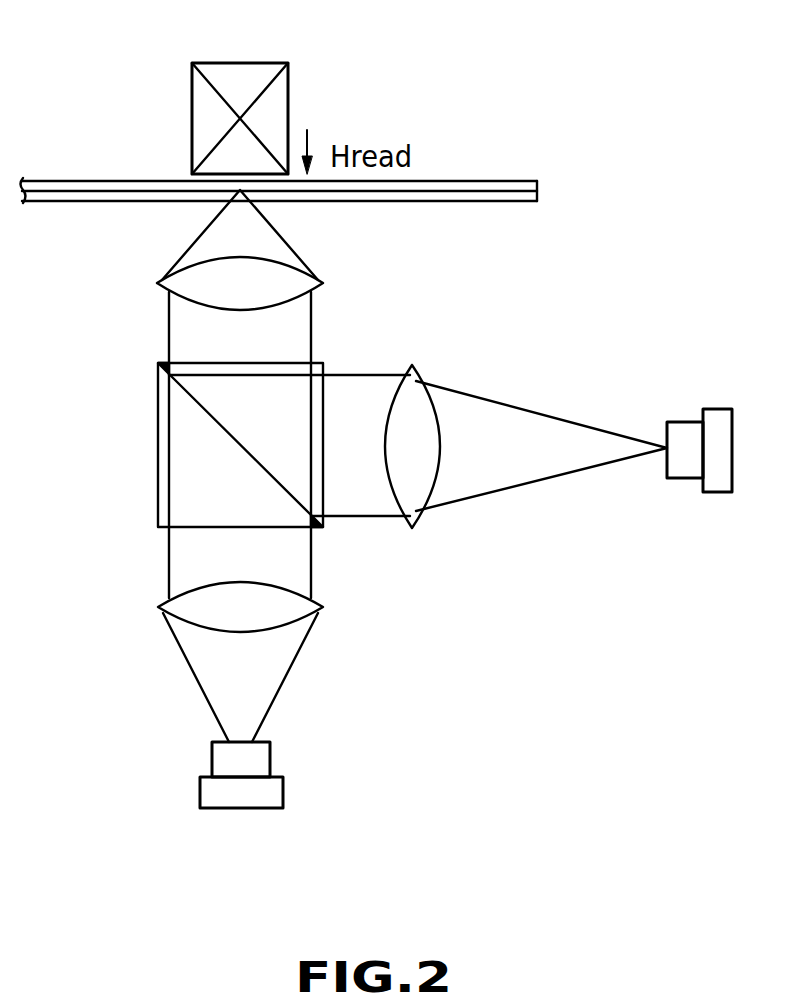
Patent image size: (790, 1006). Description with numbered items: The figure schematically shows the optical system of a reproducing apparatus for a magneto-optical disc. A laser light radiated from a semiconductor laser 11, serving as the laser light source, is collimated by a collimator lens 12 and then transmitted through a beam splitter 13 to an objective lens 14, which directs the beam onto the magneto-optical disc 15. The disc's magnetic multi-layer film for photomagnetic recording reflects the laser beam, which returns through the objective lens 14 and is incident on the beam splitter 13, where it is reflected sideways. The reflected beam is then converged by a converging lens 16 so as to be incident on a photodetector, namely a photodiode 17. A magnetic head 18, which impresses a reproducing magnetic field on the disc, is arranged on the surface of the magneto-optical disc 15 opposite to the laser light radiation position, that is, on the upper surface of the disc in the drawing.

The semiconductor laser 11 is at (212, 760).
The collimator lens 12 is at (158, 609).
The beam splitter 13 is at (158, 440).
The objective lens 14 is at (323, 283).
The magneto-optical disc 15 is at (537, 181).
The converging lens 16 is at (412, 528).
The photodiode 17 is at (690, 470).
The magnetic head 18 is at (246, 68).